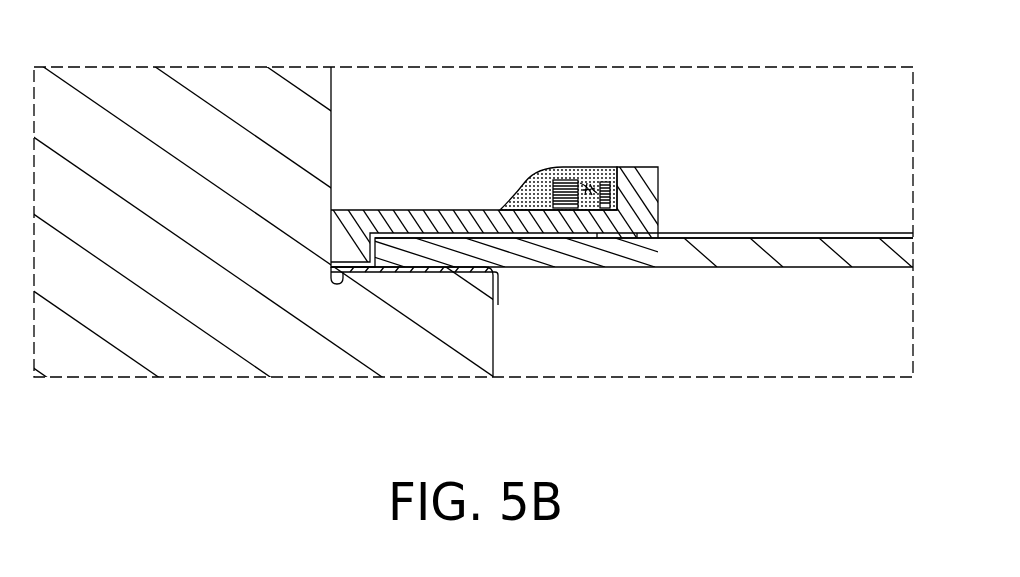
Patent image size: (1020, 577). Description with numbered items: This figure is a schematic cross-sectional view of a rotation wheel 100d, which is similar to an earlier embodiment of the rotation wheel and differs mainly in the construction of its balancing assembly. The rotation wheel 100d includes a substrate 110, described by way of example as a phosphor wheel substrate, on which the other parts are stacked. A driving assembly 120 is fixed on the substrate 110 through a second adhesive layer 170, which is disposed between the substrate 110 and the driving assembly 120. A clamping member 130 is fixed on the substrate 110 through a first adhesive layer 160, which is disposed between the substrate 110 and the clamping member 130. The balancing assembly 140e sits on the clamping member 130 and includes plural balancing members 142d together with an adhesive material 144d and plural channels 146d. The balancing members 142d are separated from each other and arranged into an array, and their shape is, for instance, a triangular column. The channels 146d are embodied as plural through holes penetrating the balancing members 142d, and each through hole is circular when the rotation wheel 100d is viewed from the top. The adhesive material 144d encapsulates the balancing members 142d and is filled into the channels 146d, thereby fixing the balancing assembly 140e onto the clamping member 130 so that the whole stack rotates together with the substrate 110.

The rotation wheel 100d is at (797, 455).
The substrate 110 is at (668, 255).
The driving assembly 120 is at (296, 357).
The clamping member 130 is at (643, 200).
The encapsulant 140e is at (515, 188).
The balancing members 142d is at (553, 168).
The adhesive material 144d is at (603, 172).
The channels 146d is at (587, 183).
The first adhesive layer 160 is at (580, 238).
The second adhesive layer 170 is at (503, 272).